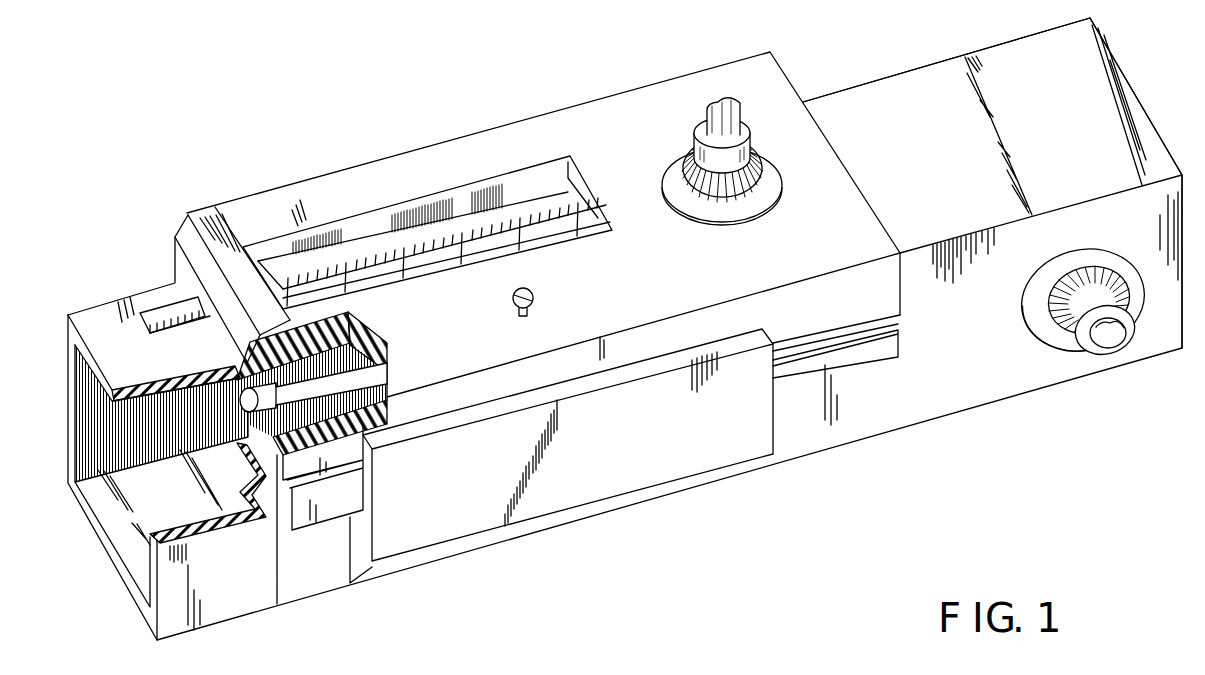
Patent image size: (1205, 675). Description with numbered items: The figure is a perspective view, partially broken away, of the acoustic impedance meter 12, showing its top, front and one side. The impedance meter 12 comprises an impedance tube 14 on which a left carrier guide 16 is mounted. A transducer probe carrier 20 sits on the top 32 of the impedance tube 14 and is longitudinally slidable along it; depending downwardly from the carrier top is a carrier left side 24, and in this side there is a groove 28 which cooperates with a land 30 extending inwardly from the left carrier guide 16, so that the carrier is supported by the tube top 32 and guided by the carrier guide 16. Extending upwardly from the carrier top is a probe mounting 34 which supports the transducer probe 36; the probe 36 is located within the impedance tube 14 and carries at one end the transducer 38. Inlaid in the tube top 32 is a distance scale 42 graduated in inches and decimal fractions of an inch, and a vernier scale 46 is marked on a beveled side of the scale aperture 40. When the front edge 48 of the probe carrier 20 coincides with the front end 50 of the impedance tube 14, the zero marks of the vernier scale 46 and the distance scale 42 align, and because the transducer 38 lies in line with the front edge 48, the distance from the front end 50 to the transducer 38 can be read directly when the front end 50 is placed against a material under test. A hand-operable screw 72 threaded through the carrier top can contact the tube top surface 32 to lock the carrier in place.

The impedance meter 12 is at (66, 316).
The impedance tube 14 is at (873, 85).
The left carrier guide 16 is at (578, 490).
The transducer probe carrier 20 is at (522, 111).
The carrier left side 24 is at (887, 295).
The groove 28 is at (900, 325).
The land 30 is at (353, 472).
The top of the impedance tube 32 is at (932, 207).
The probe mounting 34 is at (748, 220).
The transducer probe 36 is at (387, 367).
The transducer 38 is at (247, 407).
The scale aperture 40 is at (427, 231).
The distance scale 42 is at (157, 313).
The vernier scale 46 is at (552, 243).
The front edge of the probe carrier 48 is at (188, 265).
The front end of the impedance tube 50 is at (96, 349).
The hand-operable screw 72 is at (534, 304).